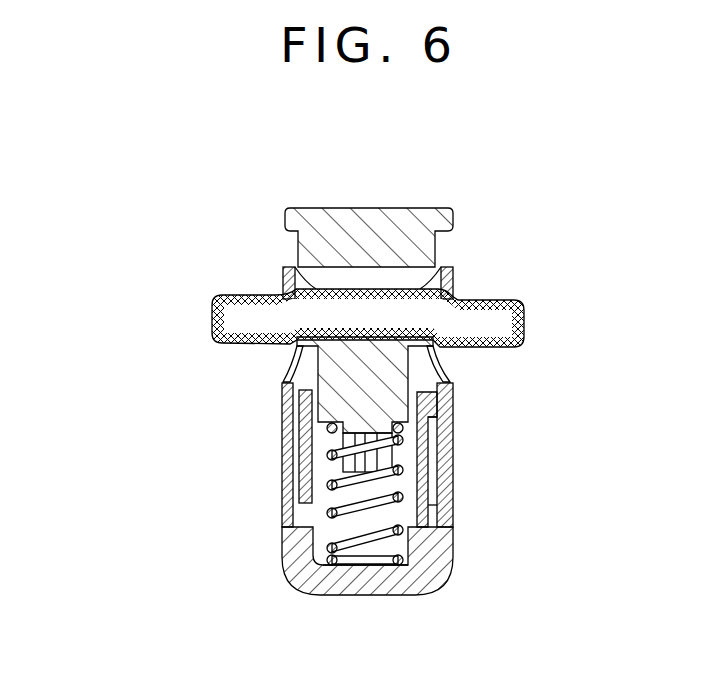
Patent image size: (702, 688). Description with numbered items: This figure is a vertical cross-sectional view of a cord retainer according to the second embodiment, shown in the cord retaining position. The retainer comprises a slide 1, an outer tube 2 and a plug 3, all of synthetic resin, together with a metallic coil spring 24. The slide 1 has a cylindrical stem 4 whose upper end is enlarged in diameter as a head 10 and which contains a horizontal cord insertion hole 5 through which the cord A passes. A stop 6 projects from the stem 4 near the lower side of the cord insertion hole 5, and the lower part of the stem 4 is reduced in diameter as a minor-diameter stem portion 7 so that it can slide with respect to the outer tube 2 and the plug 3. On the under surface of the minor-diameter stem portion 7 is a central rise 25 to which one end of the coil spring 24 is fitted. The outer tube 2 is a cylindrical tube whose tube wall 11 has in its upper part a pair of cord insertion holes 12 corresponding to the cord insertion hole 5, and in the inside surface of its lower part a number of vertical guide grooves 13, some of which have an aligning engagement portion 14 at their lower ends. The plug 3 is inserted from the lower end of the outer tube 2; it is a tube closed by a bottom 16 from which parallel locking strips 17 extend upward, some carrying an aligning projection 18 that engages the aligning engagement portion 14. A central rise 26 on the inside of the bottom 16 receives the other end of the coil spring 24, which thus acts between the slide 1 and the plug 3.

The slide 1 is at (372, 199).
The head 10 is at (316, 213).
The cylindrical stem 4 is at (297, 250).
The cord insertion hole 5 is at (378, 269).
The tube wall 11 is at (453, 284).
The cord A is at (236, 320).
The stop 6 is at (297, 340).
The minor-diameter stem portion 7 is at (290, 374).
The cord insertion holes 12 is at (443, 367).
The outer tube 2 is at (263, 412).
The guide grooves 13 is at (282, 447).
The aligning engagement portion 14 is at (450, 530).
The aligning projection 18 is at (433, 410).
The locking strips 17 is at (433, 495).
The plug 3 is at (272, 562).
The bottom 16 is at (408, 573).
The central rise 26 is at (353, 557).
The central rise 25 is at (370, 432).
The coil spring 24 is at (337, 502).